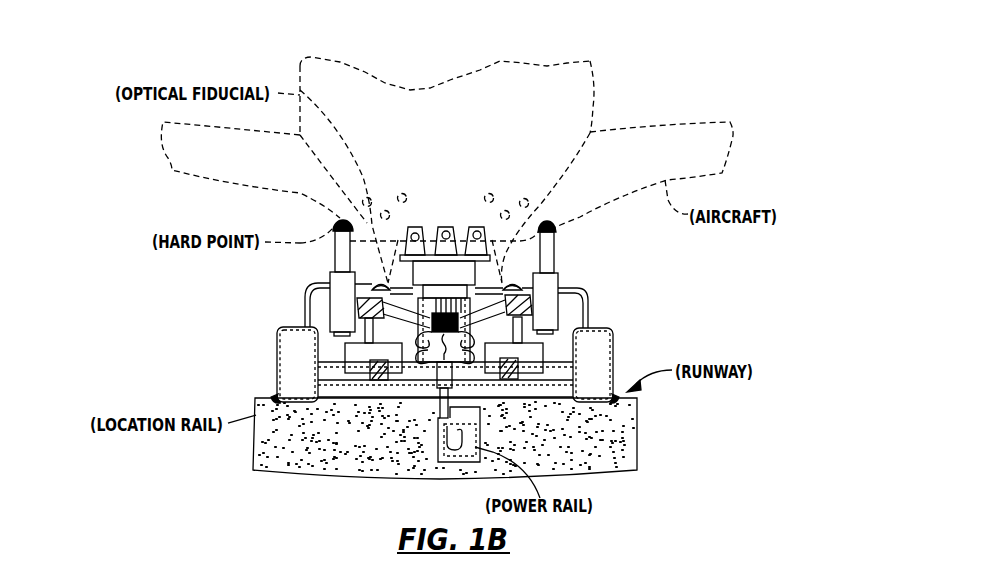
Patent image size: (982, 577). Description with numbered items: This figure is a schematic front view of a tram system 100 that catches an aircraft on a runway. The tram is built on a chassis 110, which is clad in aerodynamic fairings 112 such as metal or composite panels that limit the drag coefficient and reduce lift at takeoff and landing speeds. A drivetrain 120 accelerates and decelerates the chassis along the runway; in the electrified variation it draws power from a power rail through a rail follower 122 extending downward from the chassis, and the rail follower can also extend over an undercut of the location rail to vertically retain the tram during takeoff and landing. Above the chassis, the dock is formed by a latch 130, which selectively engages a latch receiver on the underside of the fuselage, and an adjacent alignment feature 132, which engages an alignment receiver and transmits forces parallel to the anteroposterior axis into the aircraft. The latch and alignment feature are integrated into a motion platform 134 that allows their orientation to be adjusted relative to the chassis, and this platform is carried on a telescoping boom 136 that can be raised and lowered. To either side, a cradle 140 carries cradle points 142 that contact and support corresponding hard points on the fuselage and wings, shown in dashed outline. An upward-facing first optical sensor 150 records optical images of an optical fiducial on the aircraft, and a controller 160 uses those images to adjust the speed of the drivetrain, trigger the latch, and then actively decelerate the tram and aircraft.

The tram system 100 is at (688, 65).
The chassis 110 is at (520, 366).
The aerodynamic fairings 112 is at (590, 311).
The drivetrain 120 is at (358, 367).
The rail follower 122 is at (450, 445).
The latch 130 is at (477, 227).
The alignment feature 132 is at (447, 227).
The motion platform 134 is at (550, 228).
The telescoping boom 136 is at (330, 302).
The cradle 140 is at (541, 298).
The cradle points 142 is at (337, 218).
The first optical sensor 150 is at (380, 287).
The controller 160 is at (420, 318).